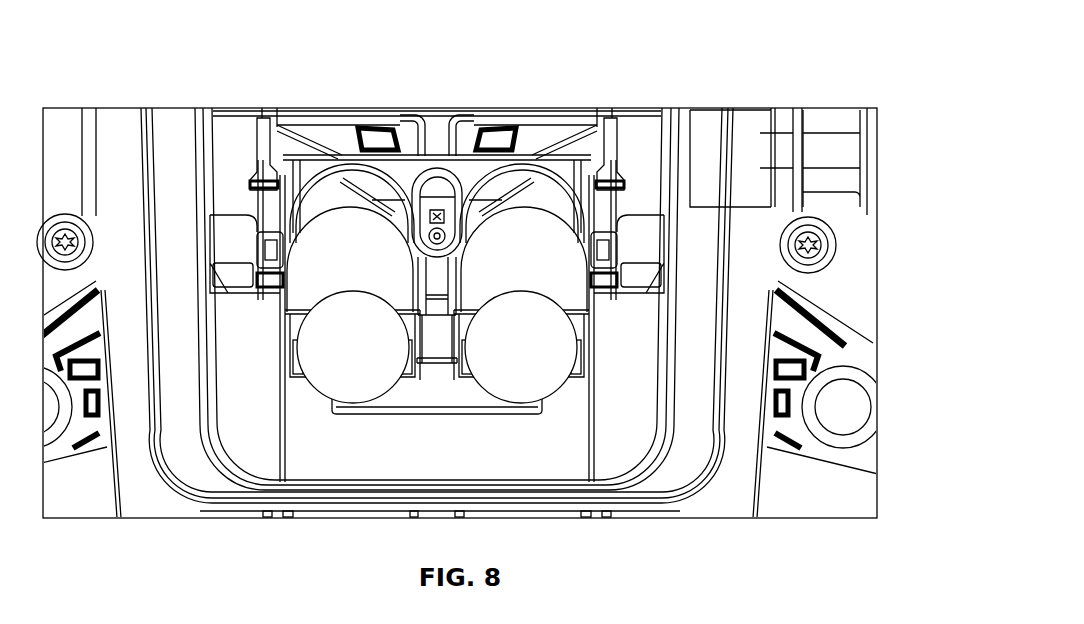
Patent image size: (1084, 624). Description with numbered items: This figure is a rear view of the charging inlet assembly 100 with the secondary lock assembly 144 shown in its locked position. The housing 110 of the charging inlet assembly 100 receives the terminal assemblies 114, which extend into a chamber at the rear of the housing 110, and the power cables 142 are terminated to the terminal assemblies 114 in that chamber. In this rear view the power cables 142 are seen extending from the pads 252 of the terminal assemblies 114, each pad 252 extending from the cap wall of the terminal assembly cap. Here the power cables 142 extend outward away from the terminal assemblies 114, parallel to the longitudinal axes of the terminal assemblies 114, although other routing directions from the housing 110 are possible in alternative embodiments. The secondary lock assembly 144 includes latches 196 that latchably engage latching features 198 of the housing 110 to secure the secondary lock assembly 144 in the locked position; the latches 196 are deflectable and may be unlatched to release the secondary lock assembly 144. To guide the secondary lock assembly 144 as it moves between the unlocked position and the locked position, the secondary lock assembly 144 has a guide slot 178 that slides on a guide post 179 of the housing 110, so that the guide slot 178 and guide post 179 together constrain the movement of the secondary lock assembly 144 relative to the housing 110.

The charging inlet assembly 100 is at (734, 50).
The housing 110 is at (735, 487).
The terminal assembly 114 is at (338, 230).
The power cable 142 is at (340, 363).
The secondary lock assembly 144 is at (432, 347).
The guide slot 178 is at (437, 186).
The guide post 179 is at (442, 232).
The latch 196 is at (258, 140).
The latching feature 198 is at (283, 180).
The pad 252 is at (292, 323).